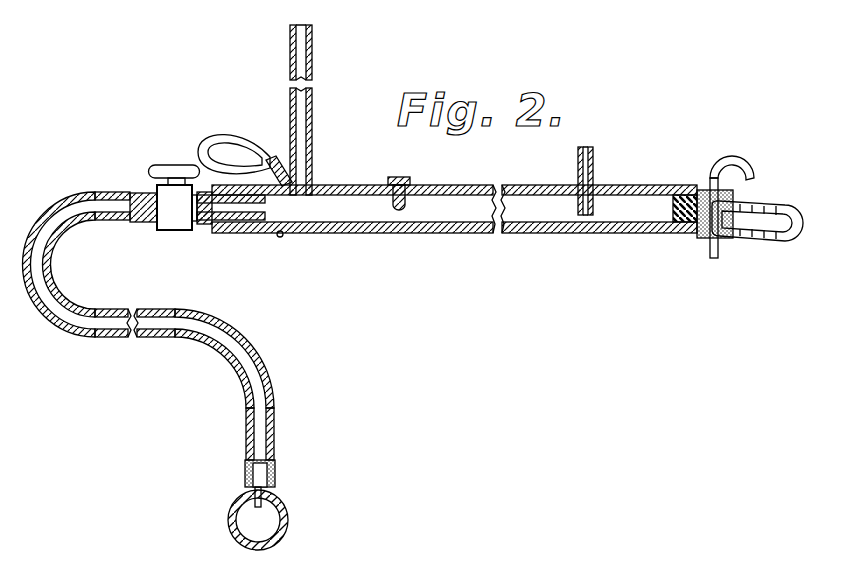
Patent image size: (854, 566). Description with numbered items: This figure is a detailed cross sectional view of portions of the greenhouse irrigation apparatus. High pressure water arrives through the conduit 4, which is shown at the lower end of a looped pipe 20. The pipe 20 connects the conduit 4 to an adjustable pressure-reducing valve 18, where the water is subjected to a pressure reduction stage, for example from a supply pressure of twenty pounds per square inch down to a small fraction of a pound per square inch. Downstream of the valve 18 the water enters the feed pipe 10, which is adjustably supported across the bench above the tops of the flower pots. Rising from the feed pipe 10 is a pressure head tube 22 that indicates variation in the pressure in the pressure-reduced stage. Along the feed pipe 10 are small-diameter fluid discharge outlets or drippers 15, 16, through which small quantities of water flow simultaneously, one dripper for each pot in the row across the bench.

The feed pipe 10 is at (432, 235).
The dripper 15 is at (398, 177).
The dripper 16 is at (600, 170).
The adjustable pressure-reducing valve 18 is at (174, 180).
The pipe 20 is at (275, 446).
The pressure head tube 22 is at (311, 78).
The conduit 4 is at (288, 527).